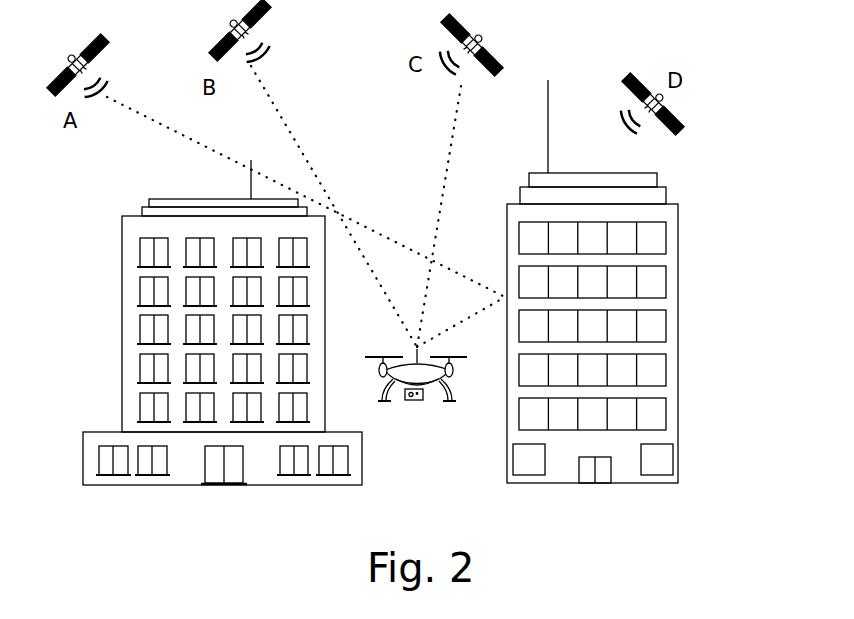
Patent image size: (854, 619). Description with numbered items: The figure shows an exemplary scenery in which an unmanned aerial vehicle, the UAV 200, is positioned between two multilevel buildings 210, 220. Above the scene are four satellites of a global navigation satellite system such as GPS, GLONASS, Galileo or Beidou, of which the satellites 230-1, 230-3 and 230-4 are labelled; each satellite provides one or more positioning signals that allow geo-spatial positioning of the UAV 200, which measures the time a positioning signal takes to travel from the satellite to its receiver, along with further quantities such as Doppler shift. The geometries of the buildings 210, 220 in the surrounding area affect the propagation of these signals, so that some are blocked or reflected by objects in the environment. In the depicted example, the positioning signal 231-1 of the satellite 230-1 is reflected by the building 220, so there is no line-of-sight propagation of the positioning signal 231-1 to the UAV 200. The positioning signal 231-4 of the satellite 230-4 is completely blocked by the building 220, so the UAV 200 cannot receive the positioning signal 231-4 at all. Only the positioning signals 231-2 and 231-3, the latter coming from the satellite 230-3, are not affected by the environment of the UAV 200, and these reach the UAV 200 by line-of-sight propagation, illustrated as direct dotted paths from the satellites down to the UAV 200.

The UAV 200 is at (418, 402).
The multilevel building 210 is at (122, 330).
The multilevel building 220 is at (678, 294).
The satellite 230-1 is at (113, 36).
The satellite 230-3 is at (488, 50).
The satellite 230-4 is at (673, 112).
The positioning signal 231-1 is at (92, 102).
The positioning signal 231-2 is at (258, 57).
The positioning signal 231-3 is at (460, 78).
The positioning signal 231-4 is at (630, 128).